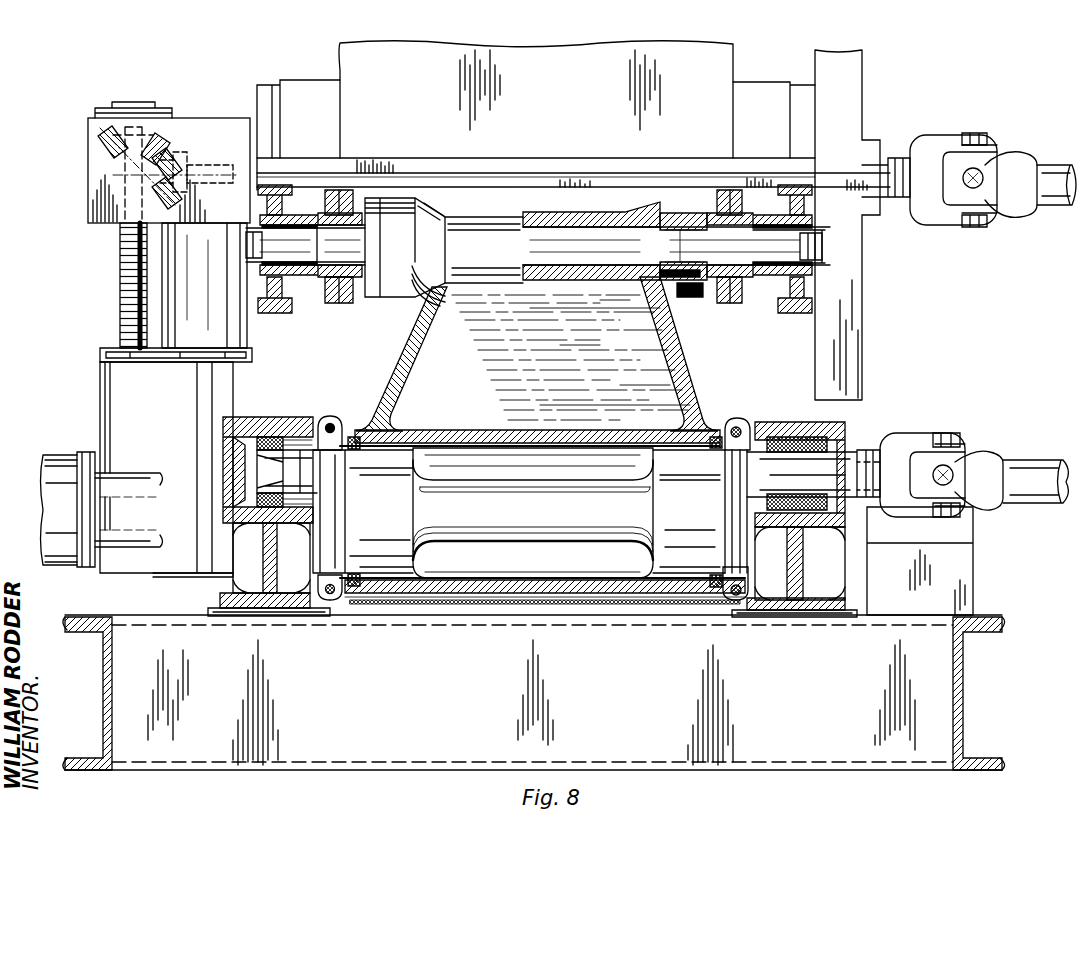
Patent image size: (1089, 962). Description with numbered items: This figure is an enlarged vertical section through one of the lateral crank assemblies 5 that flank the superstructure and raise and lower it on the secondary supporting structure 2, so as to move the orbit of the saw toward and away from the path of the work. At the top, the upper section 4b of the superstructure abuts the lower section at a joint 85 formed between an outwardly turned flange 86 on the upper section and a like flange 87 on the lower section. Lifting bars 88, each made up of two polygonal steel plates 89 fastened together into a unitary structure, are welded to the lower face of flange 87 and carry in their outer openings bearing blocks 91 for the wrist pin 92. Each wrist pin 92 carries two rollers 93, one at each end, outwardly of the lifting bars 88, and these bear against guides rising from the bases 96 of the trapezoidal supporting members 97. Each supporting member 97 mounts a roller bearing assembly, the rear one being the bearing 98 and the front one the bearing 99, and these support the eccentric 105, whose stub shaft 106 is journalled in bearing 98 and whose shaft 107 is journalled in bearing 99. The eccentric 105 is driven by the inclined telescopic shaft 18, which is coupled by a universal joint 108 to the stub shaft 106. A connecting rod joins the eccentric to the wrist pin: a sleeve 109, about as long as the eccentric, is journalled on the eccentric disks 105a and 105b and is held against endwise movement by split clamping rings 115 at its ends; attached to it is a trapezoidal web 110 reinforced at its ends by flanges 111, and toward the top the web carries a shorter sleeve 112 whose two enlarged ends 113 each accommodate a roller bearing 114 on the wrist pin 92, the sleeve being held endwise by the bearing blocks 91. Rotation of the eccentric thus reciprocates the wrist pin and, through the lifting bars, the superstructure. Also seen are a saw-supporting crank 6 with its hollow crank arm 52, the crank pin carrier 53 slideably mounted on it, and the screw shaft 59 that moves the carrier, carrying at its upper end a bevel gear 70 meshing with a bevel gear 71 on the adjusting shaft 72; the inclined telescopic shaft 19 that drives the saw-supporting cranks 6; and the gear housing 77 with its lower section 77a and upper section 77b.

The secondary supporting structure 2 is at (74, 611).
The upper section of superstructure 4b is at (362, 76).
The lateral crank assembly 5 is at (600, 201).
The saw-supporting crank 6 is at (170, 117).
The inclined telescopic shaft 18 is at (1020, 477).
The inclined telescopic shaft 19 is at (1055, 168).
The crank arm 52 is at (198, 128).
The crank pin carrier 53 is at (100, 345).
The screw shaft 59 is at (125, 254).
The bevel gear 70 is at (100, 128).
The bevel gear 71 is at (172, 160).
The adjusting shaft 72 is at (205, 172).
The gear housing 77 is at (862, 253).
The lower section of gear housing 77a is at (840, 293).
The upper section of gear housing 77b is at (845, 76).
The joint 85 is at (475, 177).
The flange 86 is at (497, 172).
The flange 87 is at (455, 182).
The lifting bar 88 is at (342, 187).
The polygonal steel plate 89 is at (340, 305).
The bearing block 91 is at (358, 214).
The wrist pin 92 is at (250, 236).
The roller 93 is at (275, 187).
The base 96 is at (225, 600).
The trapezoidal supporting member 97 is at (265, 515).
The roller bearing assembly 98 is at (845, 437).
The roller bearing assembly 99 is at (270, 430).
The eccentric 105 is at (560, 517).
The eccentric disk 105a is at (405, 560).
The eccentric disk 105b is at (662, 560).
The stub shaft 106 is at (758, 480).
The shaft 107 is at (268, 470).
The universal joint 108 is at (898, 430).
The sleeve 109 is at (510, 430).
The trapezoidal web 110 is at (425, 361).
The flange 111 is at (397, 376).
The sleeve 112 is at (510, 262).
The enlarged end 113 is at (398, 297).
The roller bearing 114 is at (640, 278).
The split clamping ring 115 is at (332, 422).